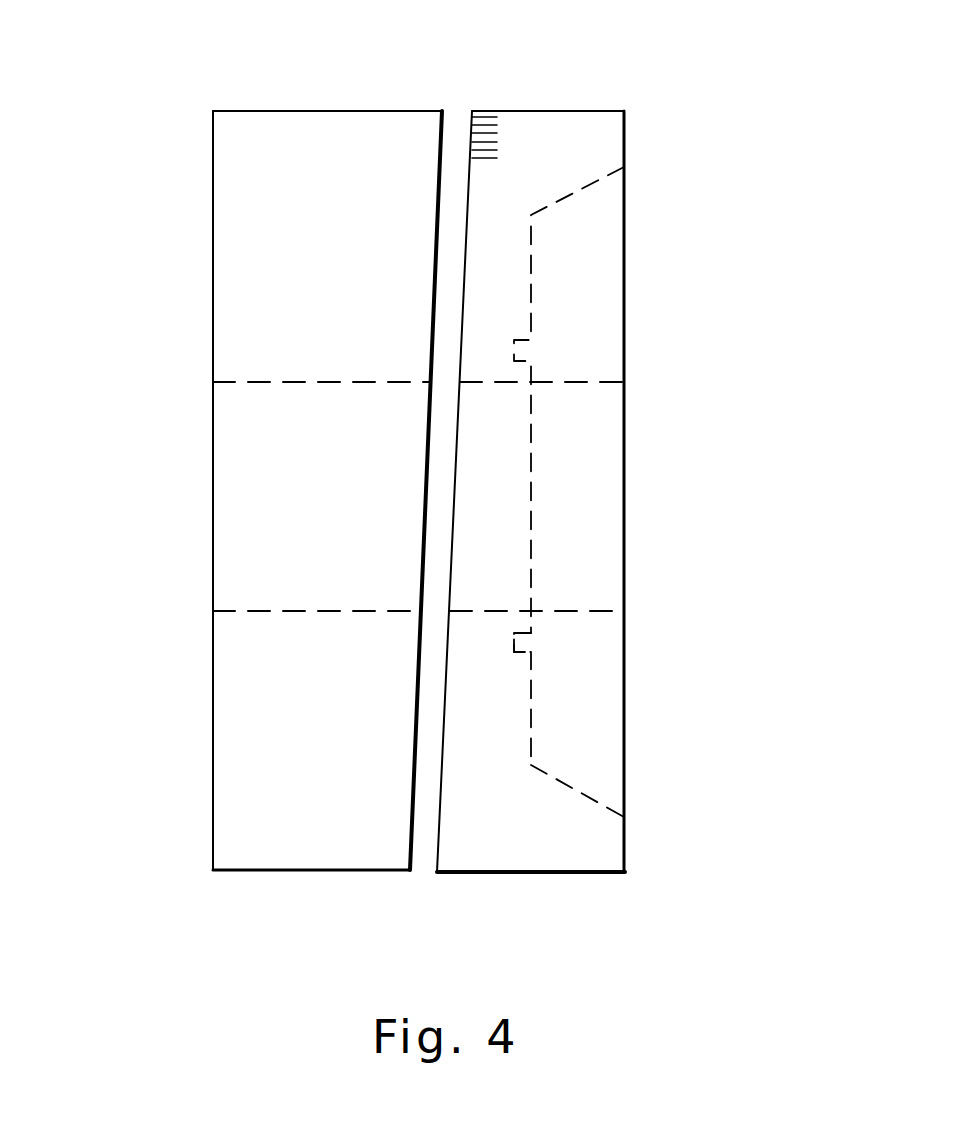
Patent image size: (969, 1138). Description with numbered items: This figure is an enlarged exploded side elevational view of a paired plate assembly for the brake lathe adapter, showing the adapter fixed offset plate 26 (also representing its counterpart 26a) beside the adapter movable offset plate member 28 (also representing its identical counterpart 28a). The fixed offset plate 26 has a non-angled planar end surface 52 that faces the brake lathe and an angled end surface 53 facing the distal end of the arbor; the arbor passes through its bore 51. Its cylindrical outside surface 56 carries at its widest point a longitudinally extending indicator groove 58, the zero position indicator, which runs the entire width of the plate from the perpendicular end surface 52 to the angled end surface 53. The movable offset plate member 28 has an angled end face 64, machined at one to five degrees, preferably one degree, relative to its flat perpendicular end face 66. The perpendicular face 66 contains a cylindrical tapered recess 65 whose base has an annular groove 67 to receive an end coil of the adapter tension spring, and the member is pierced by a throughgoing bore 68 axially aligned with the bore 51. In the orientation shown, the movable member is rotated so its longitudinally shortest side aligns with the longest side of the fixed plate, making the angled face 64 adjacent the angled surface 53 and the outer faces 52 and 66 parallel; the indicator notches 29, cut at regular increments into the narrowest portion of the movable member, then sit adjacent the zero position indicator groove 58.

The adapter fixed offset plate 26 is at (256, 488).
The adapter fixed offset plate 26a is at (256, 488).
The adapter movable offset plate member 28 is at (603, 495).
The adapter movable offset plate member 28a is at (603, 495).
The indicator groove 58 is at (302, 110).
The cylindrical outside surface 56 is at (268, 871).
The angled end surface 53 is at (441, 138).
The angled end face 64 is at (437, 848).
The indicator notches 29 is at (493, 112).
The perpendicular end face 66 is at (624, 134).
The bore 51 is at (222, 503).
The non-angled planar end surface 52 is at (213, 790).
The throughgoing bore 68 is at (517, 510).
The annular groove 67 is at (523, 642).
The cylindrical tapered recess 65 is at (608, 783).